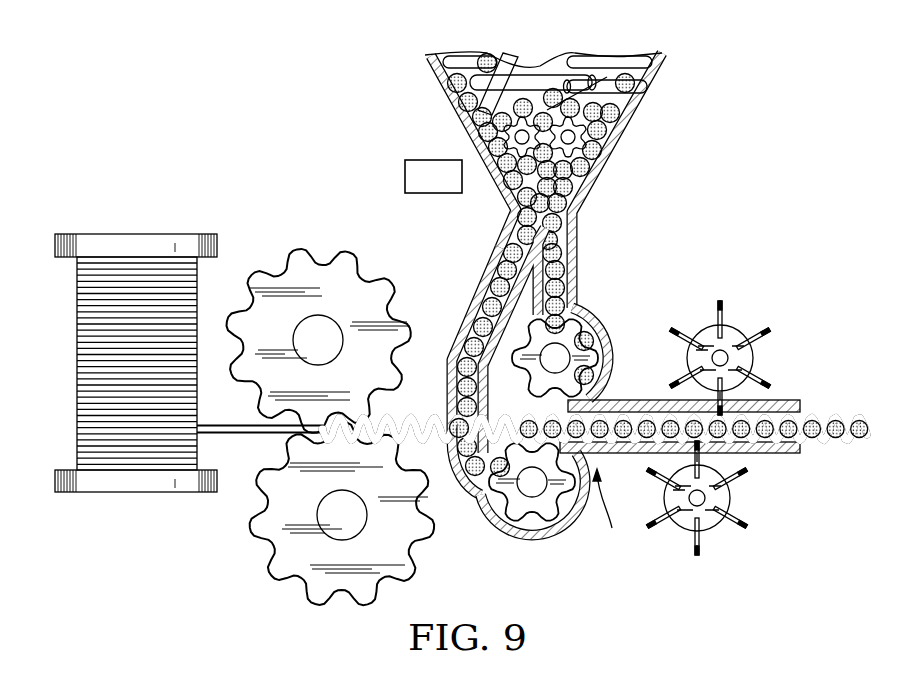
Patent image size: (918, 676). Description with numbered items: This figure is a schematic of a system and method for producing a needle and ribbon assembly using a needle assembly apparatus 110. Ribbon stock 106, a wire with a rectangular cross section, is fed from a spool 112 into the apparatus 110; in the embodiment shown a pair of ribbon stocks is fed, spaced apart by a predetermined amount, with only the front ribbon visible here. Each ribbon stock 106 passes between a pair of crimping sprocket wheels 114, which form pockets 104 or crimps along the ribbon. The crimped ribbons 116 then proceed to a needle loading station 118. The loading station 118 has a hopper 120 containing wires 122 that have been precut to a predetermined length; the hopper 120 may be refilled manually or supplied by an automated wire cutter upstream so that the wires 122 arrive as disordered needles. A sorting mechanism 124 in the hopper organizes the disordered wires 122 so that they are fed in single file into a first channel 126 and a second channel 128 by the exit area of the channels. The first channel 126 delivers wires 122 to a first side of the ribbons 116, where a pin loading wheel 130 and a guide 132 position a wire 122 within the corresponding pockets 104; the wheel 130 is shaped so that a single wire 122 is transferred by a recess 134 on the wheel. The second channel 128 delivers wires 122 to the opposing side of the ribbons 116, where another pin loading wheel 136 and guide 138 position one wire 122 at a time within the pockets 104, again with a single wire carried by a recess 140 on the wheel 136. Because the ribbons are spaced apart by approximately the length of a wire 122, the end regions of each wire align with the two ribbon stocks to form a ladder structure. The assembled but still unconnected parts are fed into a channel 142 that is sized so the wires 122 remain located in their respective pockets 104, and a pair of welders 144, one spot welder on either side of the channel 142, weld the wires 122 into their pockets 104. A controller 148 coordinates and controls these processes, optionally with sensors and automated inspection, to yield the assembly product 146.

The pockets 104 is at (292, 453).
The ribbon stock 106 is at (230, 424).
The needle assembly apparatus 110 is at (676, 232).
The spool 112 is at (135, 234).
The crimping sprocket wheels 114 is at (285, 330).
The crimped ribbons 116 is at (500, 531).
The needle loading station 118 is at (611, 510).
The hopper 120 is at (625, 118).
The wires 122 is at (586, 76).
The sorting mechanism 124 is at (587, 150).
The first channel 126 is at (578, 248).
The second channel 128 is at (493, 260).
The pin loading wheel 130 is at (588, 322).
The guide 132 is at (588, 306).
The recess 134 is at (580, 337).
The pin loading wheel 136 is at (516, 518).
The guide 138 is at (481, 510).
The recess 140 is at (558, 500).
The channel 142 is at (610, 456).
The welders 144 is at (750, 358).
The assembly product 146 is at (838, 420).
The controller 148 is at (483, 268).